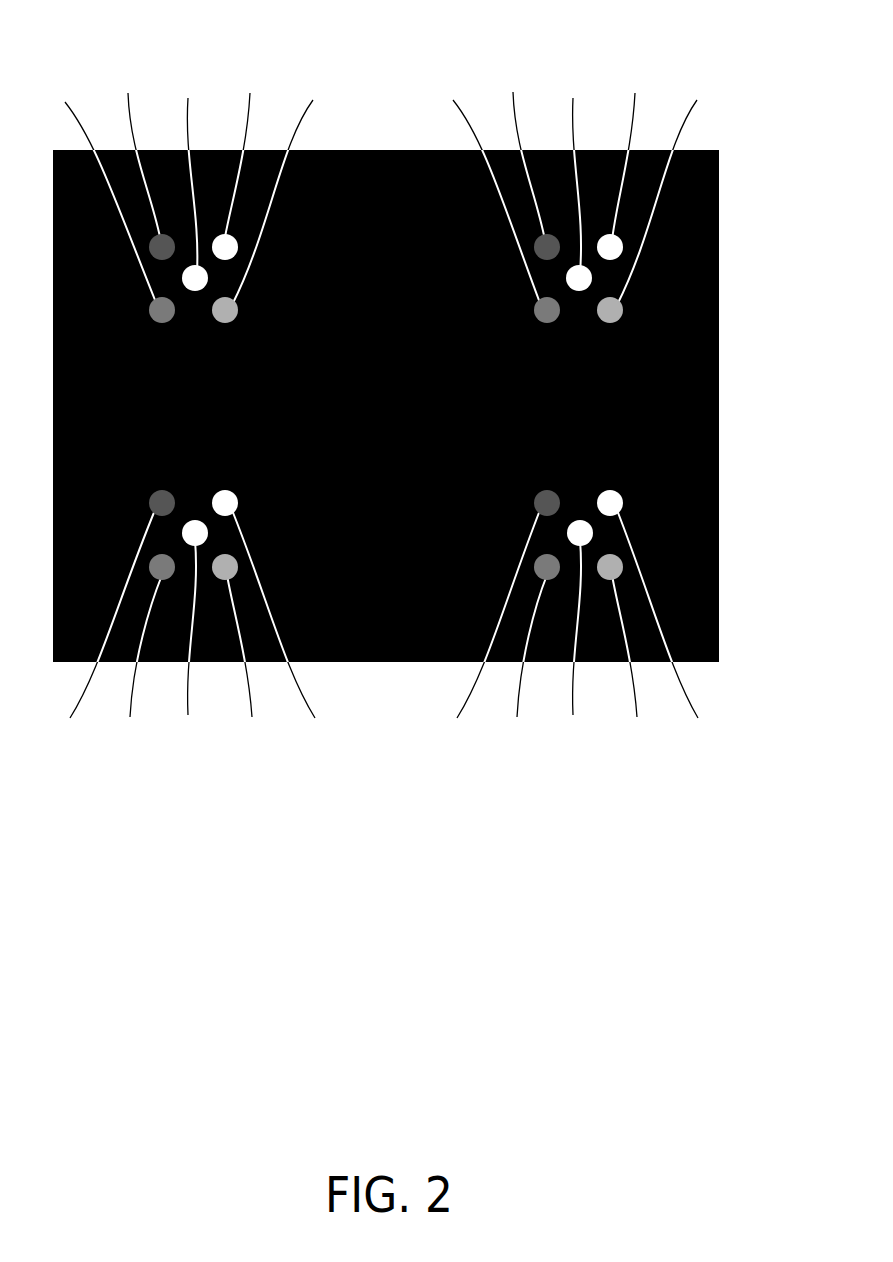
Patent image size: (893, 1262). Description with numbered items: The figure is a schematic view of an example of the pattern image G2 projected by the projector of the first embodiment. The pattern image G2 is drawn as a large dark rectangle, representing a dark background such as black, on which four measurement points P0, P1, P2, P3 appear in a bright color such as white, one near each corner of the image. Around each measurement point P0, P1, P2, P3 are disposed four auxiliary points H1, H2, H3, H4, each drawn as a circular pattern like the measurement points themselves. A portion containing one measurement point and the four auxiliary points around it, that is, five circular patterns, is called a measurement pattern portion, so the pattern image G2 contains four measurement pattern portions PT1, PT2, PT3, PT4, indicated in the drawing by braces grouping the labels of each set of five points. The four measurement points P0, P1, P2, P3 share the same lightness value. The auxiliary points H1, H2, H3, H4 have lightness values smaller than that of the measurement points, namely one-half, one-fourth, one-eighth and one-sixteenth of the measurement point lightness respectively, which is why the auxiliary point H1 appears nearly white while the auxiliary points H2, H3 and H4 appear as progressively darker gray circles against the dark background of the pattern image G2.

The pattern image G2 is at (698, 332).
The measurement pattern portion PT1 is at (329, 65).
The measurement pattern portion PT2 is at (717, 65).
The measurement pattern portion PT3 is at (717, 751).
The measurement pattern portion PT4 is at (329, 751).
The measurement point P0 is at (192, 178).
The measurement point P1 is at (576, 178).
The measurement point P2 is at (577, 634).
The measurement point P3 is at (192, 634).
The auxiliary point H1 is at (462, 404).
The auxiliary point H2 is at (462, 415).
The auxiliary point H3 is at (305, 415).
The auxiliary point H4 is at (305, 404).